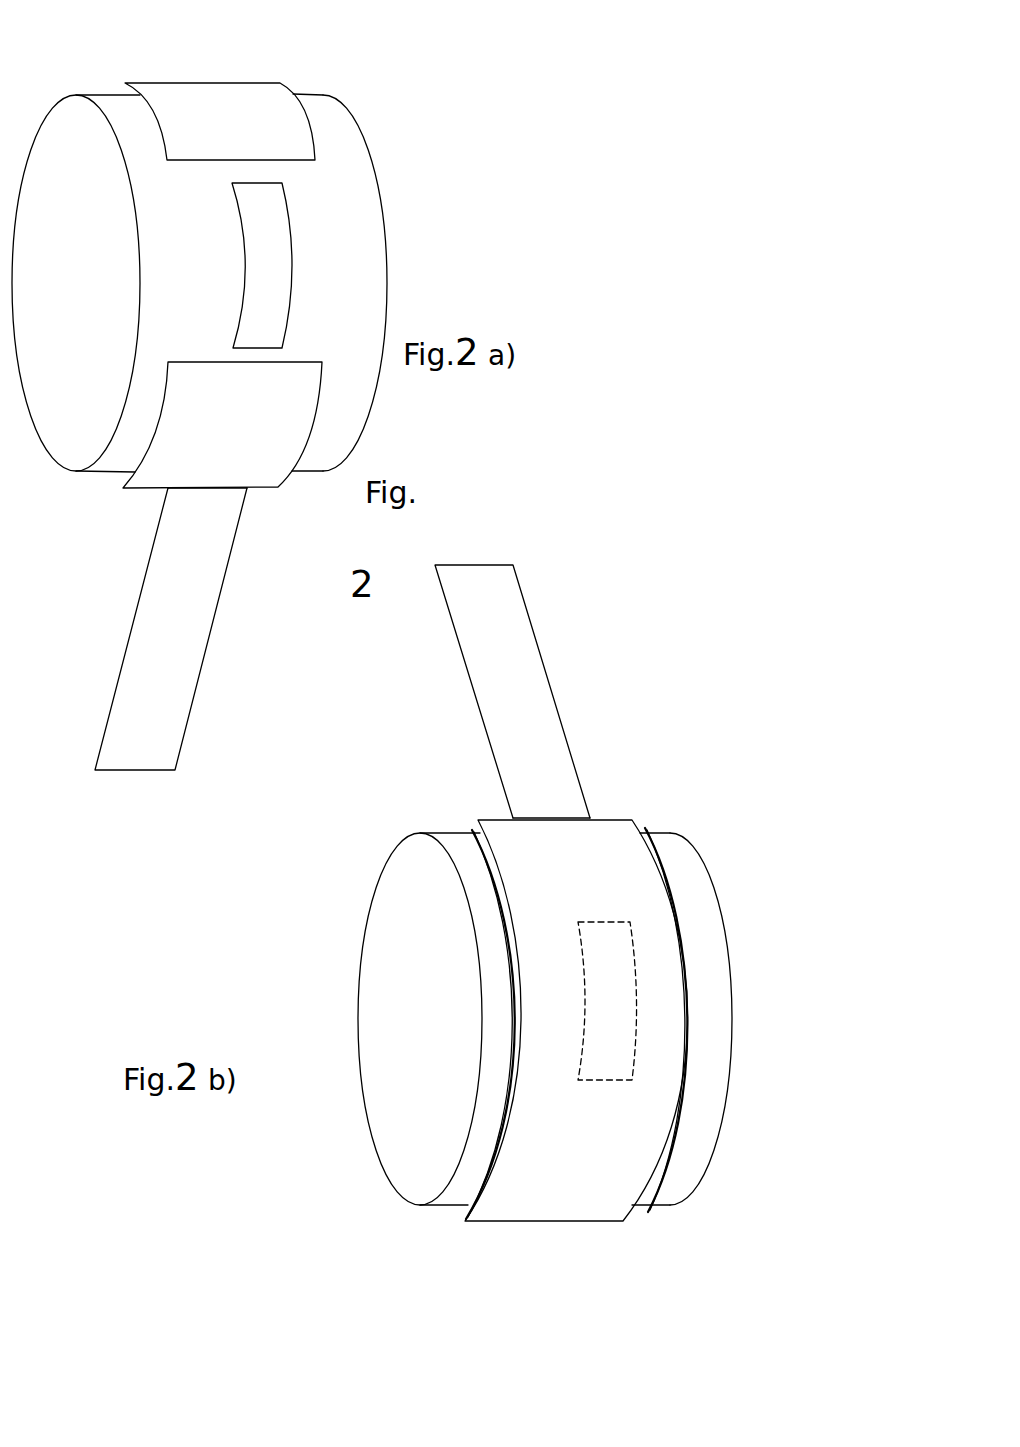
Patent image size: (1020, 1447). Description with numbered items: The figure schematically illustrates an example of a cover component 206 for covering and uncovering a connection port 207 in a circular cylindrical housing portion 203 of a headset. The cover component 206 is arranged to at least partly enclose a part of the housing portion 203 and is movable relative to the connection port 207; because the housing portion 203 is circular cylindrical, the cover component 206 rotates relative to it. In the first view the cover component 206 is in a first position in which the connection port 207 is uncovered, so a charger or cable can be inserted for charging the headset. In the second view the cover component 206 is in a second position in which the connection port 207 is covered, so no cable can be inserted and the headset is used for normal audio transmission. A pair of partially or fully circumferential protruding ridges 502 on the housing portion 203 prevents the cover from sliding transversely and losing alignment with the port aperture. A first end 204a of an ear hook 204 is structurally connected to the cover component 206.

In FIG. 2a, the housing portion 203 is at (362, 438).
In FIG. 2b, the housing portion 203 is at (702, 1182).
In FIG. 2a, the ear hook 204 is at (220, 603).
In FIG. 2b, the ear hook 204 is at (558, 687).
In FIG. 2a, the first end 204a is at (250, 490).
In FIG. 2b, the first end 204a is at (590, 818).
In FIG. 2a, the cover component 206 is at (228, 82).
In FIG. 2b, the cover component 206 is at (503, 1225).
In FIG. 2a, the connection port 207 is at (295, 263).
In FIG. 2b, the connection port 207 is at (637, 935).
In FIG. 2b, the protruding ridges 502 is at (700, 1077).